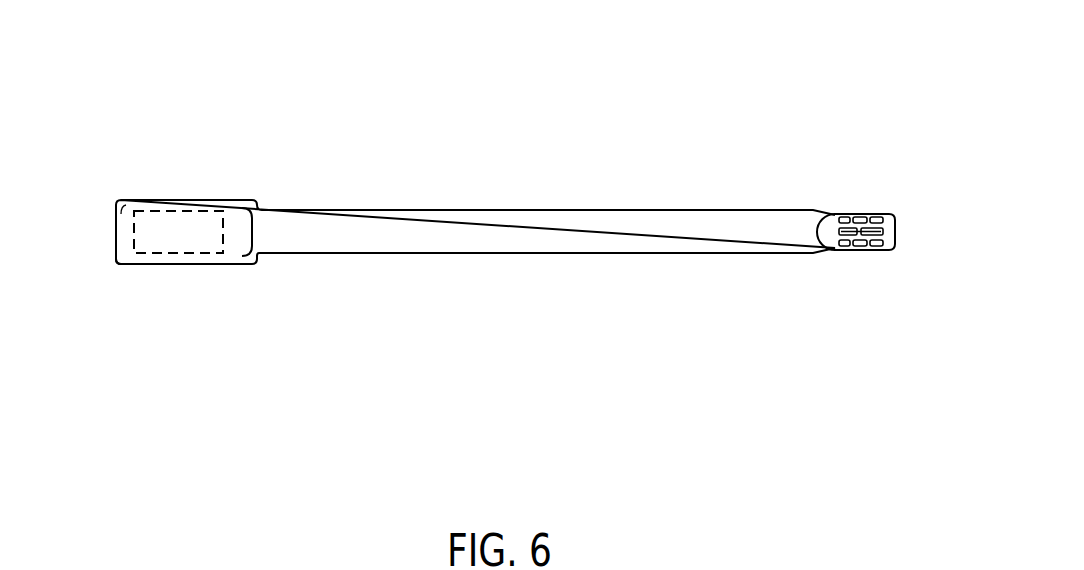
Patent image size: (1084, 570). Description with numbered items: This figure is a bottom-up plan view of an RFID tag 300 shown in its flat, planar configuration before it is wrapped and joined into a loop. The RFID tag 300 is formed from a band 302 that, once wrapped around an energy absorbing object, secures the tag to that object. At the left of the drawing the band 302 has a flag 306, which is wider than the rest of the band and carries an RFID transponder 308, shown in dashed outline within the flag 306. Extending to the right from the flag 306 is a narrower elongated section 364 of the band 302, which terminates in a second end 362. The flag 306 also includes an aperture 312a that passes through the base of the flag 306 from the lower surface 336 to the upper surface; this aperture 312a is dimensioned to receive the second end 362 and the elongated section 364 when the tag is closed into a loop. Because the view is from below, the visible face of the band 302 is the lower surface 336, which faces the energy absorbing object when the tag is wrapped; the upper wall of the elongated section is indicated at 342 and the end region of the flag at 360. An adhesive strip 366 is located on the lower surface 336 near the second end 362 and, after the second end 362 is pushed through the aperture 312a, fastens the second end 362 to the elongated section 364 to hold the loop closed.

The RFID tag 300 is at (119, 134).
The band 302 is at (420, 210).
The flag 306 is at (119, 199).
The RFID transponder 308 is at (202, 222).
The aperture 312a is at (262, 253).
The lower surface 336 is at (479, 242).
The upper wall of body 342 is at (550, 210).
The housing end 360 is at (118, 245).
The second end 362 is at (895, 230).
The elongated section 364 is at (613, 242).
The adhesive strip 366 is at (867, 215).